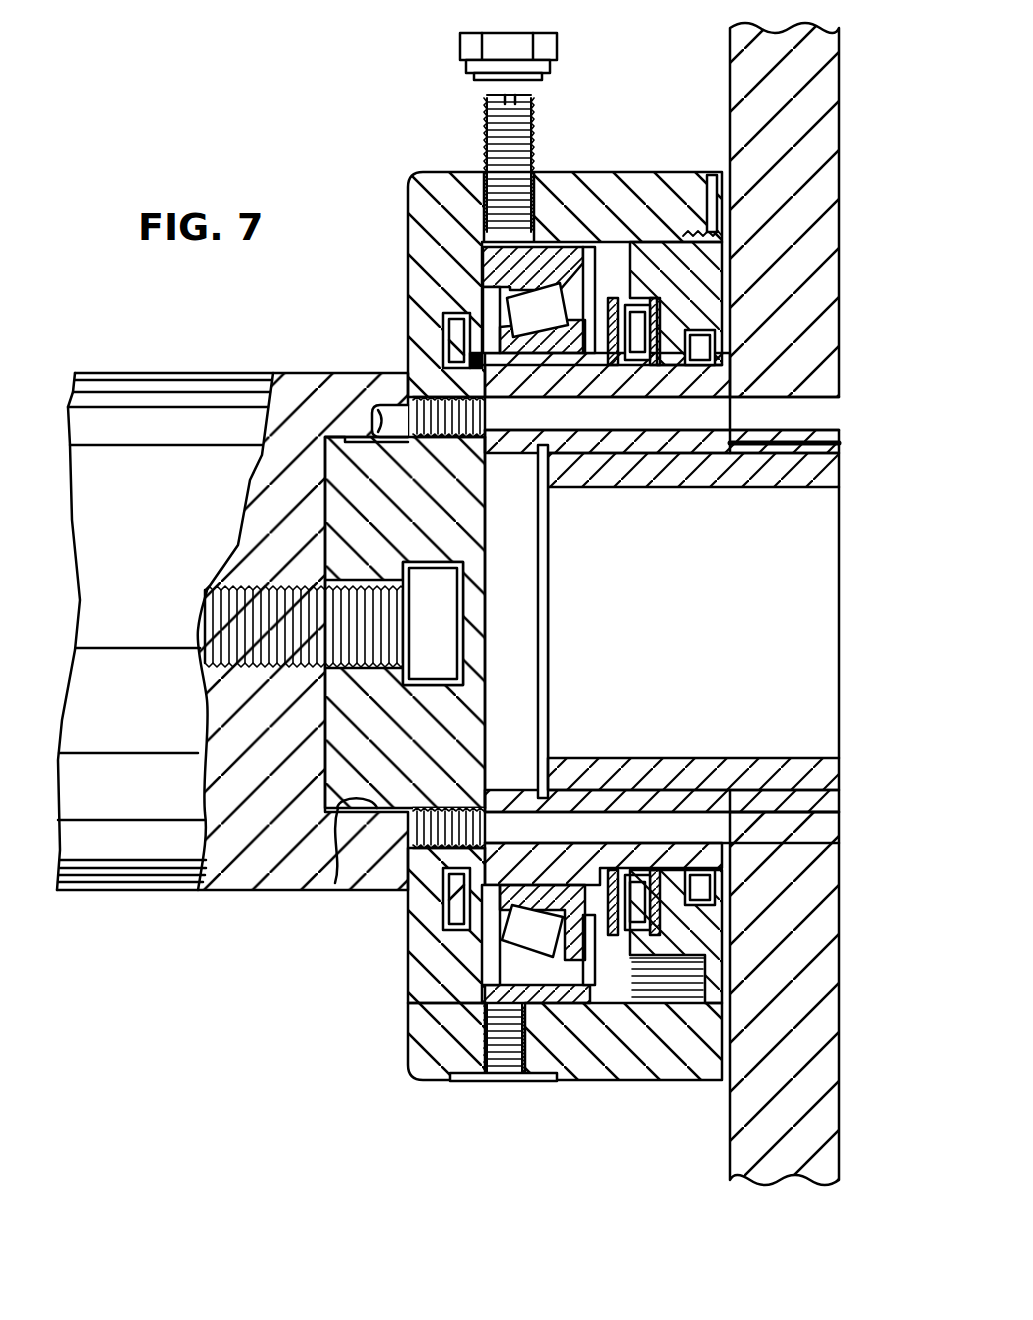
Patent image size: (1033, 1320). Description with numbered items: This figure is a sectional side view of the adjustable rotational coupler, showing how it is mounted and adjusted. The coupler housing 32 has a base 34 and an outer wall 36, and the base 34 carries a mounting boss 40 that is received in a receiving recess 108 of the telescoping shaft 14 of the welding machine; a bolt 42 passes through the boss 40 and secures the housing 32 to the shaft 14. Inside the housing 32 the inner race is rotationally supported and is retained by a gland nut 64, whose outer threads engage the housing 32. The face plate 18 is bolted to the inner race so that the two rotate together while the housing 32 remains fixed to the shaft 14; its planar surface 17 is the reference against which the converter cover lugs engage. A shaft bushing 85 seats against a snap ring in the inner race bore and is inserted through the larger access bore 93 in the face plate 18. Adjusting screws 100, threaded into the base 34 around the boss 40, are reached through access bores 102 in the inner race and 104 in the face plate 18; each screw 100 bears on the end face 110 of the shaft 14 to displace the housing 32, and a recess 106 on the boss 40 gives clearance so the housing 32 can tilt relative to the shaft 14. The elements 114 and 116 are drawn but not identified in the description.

The telescoping shaft 14 is at (255, 870).
The surface of the face plate 17 is at (840, 187).
The face plate 18 is at (818, 1163).
The housing 32 is at (433, 1005).
The base 34 is at (408, 967).
The outer wall 36 is at (618, 1063).
The mounting boss 40 is at (362, 488).
The bolt 42 is at (203, 637).
The gland nut 64 is at (704, 247).
The shaft bushing 85 is at (793, 766).
The access bore 93 is at (838, 441).
The adjusting screw 100 is at (410, 355).
The access bore in the inner race 102 is at (735, 397).
The access bore in the face plate 104 is at (828, 415).
The recess 106 is at (333, 883).
The receiving recess 108 is at (382, 418).
The end face 110 is at (408, 358).
The screw 114 is at (492, 140).
The cap 116 is at (468, 50).